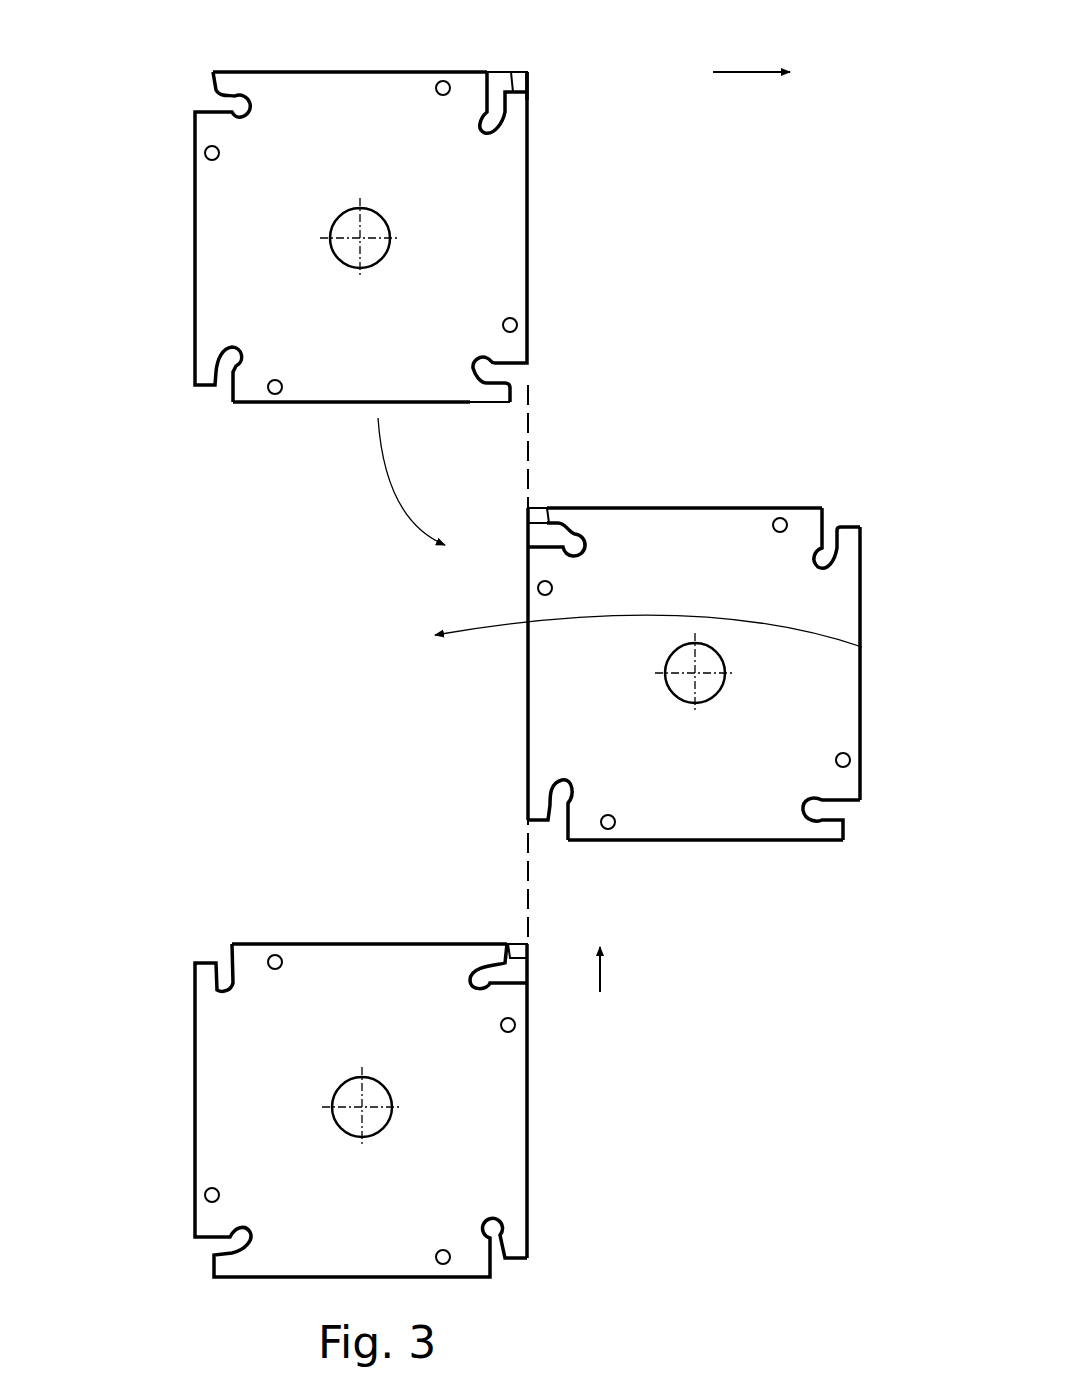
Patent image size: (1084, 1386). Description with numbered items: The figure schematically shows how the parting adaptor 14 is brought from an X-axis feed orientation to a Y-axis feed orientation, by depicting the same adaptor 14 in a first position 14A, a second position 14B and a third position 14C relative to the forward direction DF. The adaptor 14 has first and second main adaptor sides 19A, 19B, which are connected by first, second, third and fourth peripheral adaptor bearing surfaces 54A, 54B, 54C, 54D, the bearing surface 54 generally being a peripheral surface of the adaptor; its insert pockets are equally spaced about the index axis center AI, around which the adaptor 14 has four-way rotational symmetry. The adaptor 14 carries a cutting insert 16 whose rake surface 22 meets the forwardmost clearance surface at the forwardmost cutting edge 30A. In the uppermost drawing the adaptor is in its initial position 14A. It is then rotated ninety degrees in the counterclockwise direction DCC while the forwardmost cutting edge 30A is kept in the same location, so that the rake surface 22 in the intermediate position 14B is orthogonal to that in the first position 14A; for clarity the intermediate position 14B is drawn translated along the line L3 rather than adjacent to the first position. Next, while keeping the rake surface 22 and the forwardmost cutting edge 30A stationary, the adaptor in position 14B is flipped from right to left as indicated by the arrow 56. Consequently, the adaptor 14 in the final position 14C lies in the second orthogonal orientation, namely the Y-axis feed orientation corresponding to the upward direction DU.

The adaptor 14 is at (504, 638).
The first position 14A is at (265, 62).
The second position 14B is at (790, 483).
The third position 14C is at (193, 915).
The cutting insert 16 is at (497, 66).
The first main adaptor side 19A is at (435, 480).
The second main adaptor side 19B is at (362, 1134).
The rake surface 22 is at (521, 67).
The forwardmost cutting edge 30A is at (533, 72).
The peripheral adaptor bearing surface 54 is at (315, 405).
The first peripheral adaptor bearing surface 54A is at (862, 733).
The second peripheral adaptor bearing surface 54B is at (733, 840).
The third peripheral adaptor bearing surface 54C is at (360, 72).
The fourth peripheral adaptor bearing surface 54D is at (667, 508).
The arrow 56 is at (700, 607).
The line L3 is at (530, 403).
The index axis center AI is at (357, 243).
The counterclockwise direction DCC is at (392, 481).
The forward direction DF is at (751, 51).
The upward direction DU is at (625, 972).